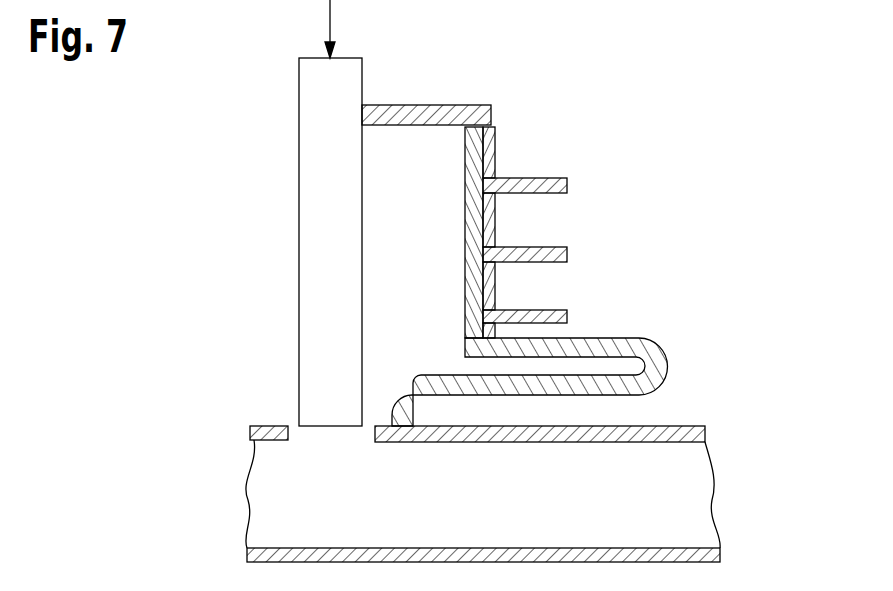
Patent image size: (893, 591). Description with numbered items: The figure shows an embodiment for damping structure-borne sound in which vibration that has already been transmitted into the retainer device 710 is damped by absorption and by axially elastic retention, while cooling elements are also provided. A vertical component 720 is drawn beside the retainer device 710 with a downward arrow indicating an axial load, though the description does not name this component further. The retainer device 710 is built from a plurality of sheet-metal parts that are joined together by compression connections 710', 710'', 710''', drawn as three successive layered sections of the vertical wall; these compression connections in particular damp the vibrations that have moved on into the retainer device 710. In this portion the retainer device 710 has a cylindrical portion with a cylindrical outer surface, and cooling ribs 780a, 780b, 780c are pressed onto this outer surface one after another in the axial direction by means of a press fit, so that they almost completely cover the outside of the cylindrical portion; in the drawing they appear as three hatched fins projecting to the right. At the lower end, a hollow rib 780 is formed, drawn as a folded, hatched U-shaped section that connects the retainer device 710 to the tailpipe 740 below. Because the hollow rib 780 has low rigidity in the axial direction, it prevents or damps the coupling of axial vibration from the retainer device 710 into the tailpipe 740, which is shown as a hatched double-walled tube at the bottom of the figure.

The punch / pressing tool 720 is at (350, 80).
The retainer device 710 is at (516, 232).
The compression connection 710' is at (437, 160).
The compression connection 710'' is at (437, 227).
The compression connection 710''' is at (437, 297).
The hollow rib 780 is at (640, 346).
The cooling rib 780a is at (567, 188).
The cooling rib 780b is at (567, 256).
The cooling rib 780c is at (567, 319).
The tailpipe 740 is at (675, 428).